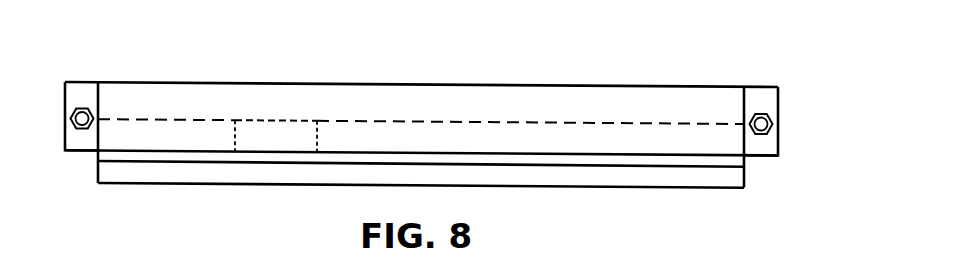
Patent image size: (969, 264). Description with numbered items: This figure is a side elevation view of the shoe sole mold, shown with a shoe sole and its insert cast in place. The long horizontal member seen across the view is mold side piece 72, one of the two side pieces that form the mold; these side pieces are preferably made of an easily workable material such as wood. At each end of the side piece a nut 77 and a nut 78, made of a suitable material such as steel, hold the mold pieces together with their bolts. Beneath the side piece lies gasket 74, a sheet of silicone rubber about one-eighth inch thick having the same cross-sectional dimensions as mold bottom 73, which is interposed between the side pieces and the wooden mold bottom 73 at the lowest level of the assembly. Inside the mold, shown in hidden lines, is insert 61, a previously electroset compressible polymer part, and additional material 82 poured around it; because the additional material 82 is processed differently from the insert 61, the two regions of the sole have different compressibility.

The insert 61 is at (261, 137).
The mold side piece 72 is at (507, 78).
The mold bottom 73 is at (748, 177).
The gasket 74 is at (748, 161).
The nut 77 is at (79, 133).
The nut 78 is at (770, 112).
The additional material 82 is at (565, 136).